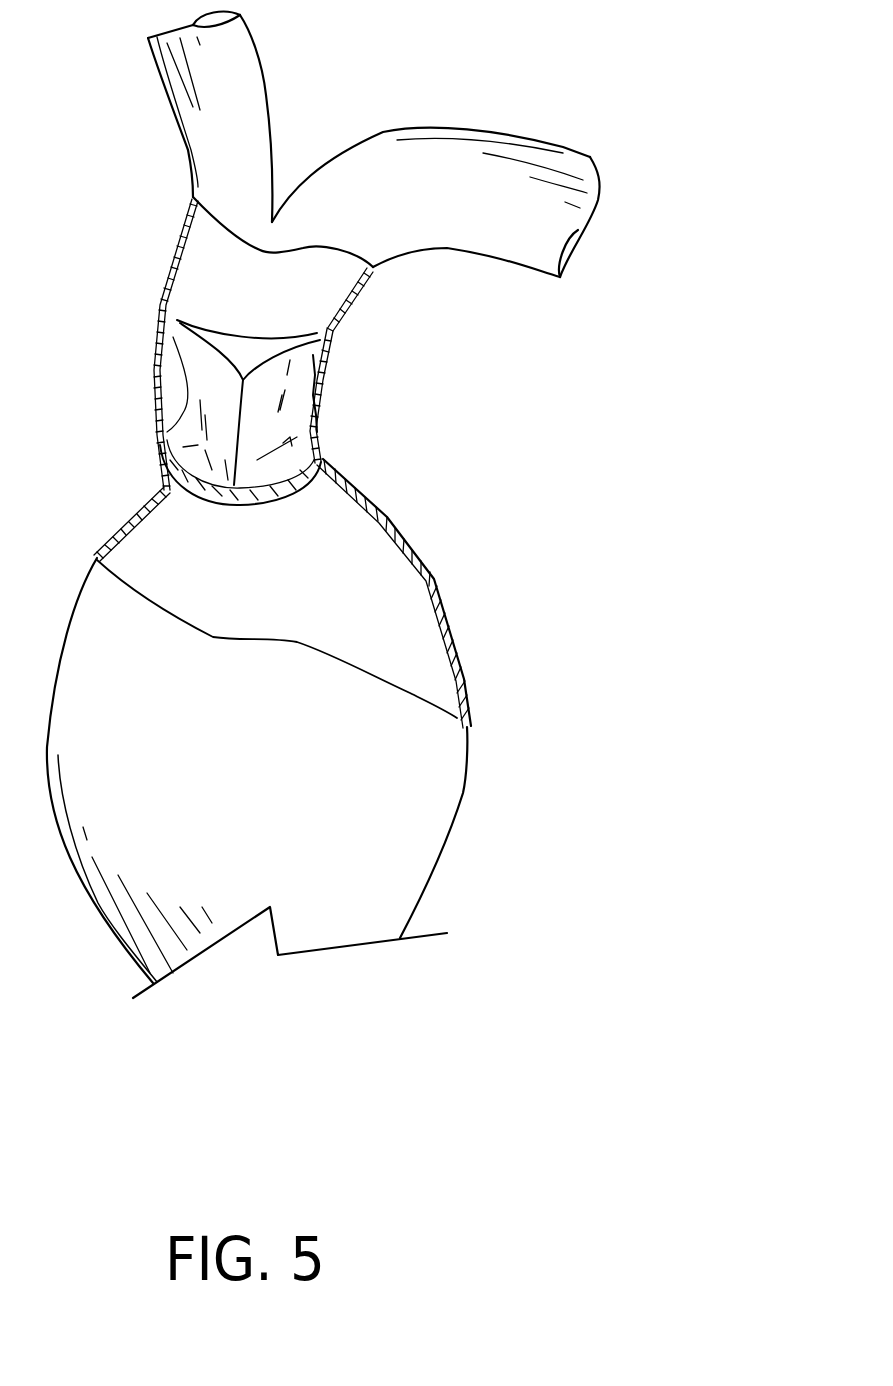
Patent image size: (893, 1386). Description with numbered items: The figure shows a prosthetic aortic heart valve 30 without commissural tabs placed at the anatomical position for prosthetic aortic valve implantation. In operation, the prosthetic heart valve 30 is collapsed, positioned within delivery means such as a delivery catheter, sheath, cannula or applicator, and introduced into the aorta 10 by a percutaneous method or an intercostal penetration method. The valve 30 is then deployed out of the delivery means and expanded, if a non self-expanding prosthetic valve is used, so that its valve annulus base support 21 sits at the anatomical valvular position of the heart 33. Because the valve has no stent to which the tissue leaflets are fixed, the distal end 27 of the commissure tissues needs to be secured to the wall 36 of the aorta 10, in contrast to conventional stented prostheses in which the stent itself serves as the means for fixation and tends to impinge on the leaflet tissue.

The aorta 10 is at (383, 132).
The wall of the aorta 36 is at (279, 380).
The distal end of the commissure tissues 27 is at (160, 315).
The valve annulus base support 21 is at (320, 460).
The prosthetic aortic heart valve 30 is at (335, 378).
The heart 33 is at (423, 660).